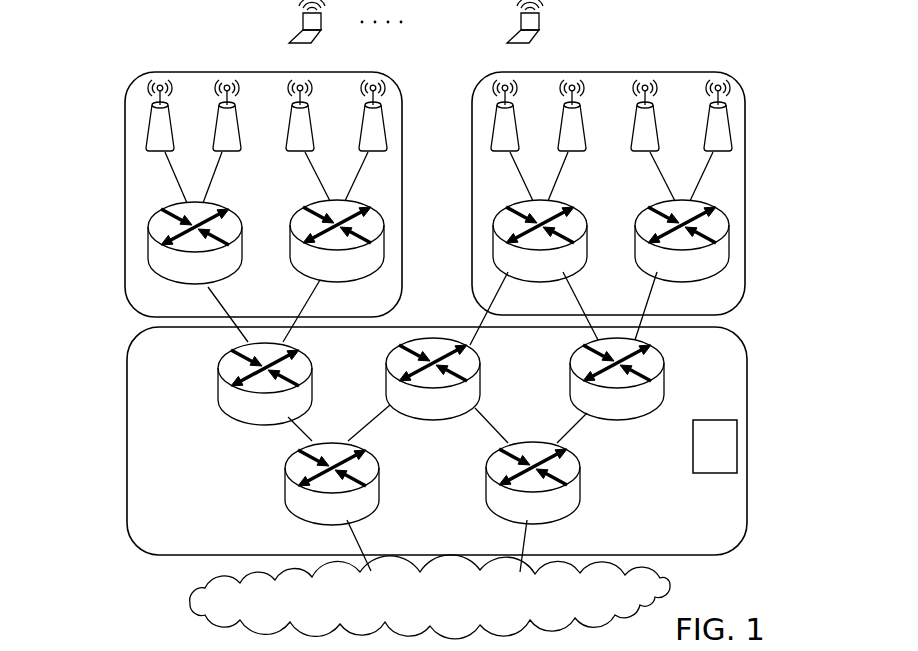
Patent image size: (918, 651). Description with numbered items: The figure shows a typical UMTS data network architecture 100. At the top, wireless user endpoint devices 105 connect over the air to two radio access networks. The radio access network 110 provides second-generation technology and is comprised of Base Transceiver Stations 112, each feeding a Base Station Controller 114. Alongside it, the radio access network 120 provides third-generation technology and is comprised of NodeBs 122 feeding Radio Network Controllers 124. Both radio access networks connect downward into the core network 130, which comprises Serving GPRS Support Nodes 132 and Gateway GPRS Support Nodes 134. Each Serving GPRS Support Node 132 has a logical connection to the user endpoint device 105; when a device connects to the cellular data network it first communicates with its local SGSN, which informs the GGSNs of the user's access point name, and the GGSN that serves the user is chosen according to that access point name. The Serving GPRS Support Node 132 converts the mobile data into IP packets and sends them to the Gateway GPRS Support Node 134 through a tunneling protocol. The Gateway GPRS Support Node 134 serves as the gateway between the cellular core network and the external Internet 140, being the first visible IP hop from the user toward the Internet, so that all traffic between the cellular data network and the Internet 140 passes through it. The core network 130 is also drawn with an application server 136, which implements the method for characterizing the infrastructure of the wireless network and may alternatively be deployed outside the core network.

The UMTS data network architecture 100 is at (720, 53).
The wireless user endpoint device 105 is at (300, 32).
The radio access network 110 is at (102, 72).
The Base Transceiver Station 112 is at (157, 125).
The Base Station Controller 114 is at (158, 216).
The radio access network 120 is at (770, 67).
The NodeB 122 is at (507, 121).
The Radio Network Controller 124 is at (503, 214).
The core network 130 is at (102, 327).
The Serving GPRS Support Node 132 is at (222, 392).
The Gateway GPRS Support Node 134 is at (290, 491).
The application server 136 is at (737, 446).
The Internet 140 is at (190, 603).